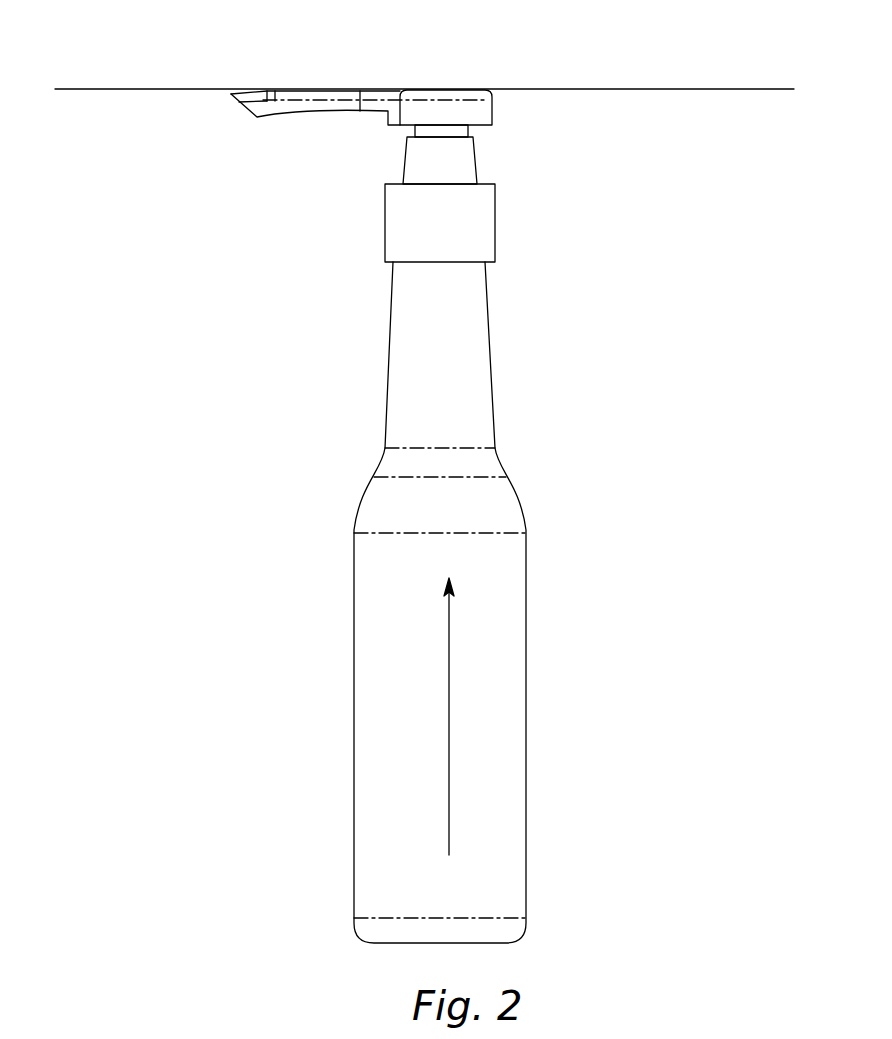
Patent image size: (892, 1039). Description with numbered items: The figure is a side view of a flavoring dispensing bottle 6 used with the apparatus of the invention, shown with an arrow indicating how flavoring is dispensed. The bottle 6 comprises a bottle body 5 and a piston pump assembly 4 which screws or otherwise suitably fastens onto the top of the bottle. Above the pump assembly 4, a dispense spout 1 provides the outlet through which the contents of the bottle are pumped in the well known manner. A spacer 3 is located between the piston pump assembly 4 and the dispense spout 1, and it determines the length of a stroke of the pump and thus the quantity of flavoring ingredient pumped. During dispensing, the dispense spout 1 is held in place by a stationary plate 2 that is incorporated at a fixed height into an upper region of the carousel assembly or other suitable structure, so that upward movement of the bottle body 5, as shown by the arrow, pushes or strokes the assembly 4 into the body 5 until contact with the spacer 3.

The dispense spout 1 is at (245, 121).
The stationary plate 2 is at (452, 82).
The spacer 3 is at (380, 133).
The piston pump assembly 4 is at (505, 230).
The bottle body 5 is at (377, 323).
The flavoring dispensing bottle 6 is at (424, 482).